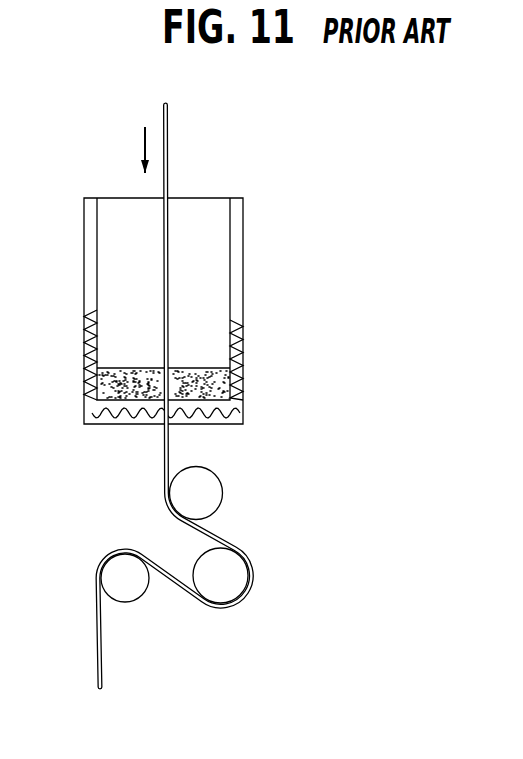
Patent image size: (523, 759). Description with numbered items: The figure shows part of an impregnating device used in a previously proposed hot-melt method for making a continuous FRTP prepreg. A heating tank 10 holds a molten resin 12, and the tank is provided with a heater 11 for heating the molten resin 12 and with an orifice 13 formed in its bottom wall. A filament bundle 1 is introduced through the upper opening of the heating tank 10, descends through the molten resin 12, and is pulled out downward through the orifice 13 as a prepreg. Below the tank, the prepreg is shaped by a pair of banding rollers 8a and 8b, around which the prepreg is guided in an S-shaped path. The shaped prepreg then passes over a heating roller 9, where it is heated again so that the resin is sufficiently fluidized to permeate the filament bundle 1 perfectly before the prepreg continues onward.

The filament bundle 1 is at (171, 147).
The banding roller 8a is at (213, 493).
The banding roller 8b is at (233, 580).
The heating roller 9 is at (136, 585).
The heating tank 10 is at (240, 268).
The heater 11 is at (84, 333).
The molten resin 12 is at (215, 385).
The orifice 13 is at (133, 431).